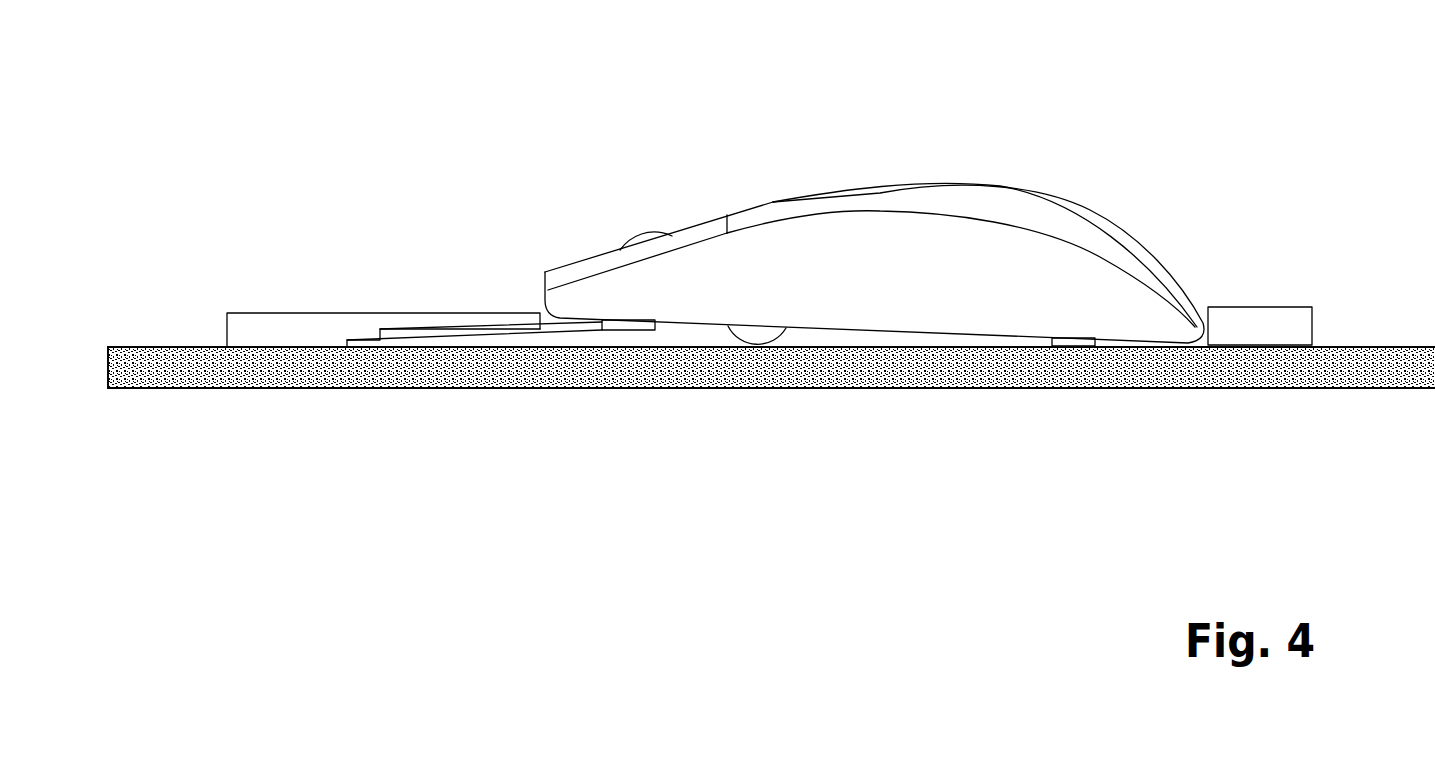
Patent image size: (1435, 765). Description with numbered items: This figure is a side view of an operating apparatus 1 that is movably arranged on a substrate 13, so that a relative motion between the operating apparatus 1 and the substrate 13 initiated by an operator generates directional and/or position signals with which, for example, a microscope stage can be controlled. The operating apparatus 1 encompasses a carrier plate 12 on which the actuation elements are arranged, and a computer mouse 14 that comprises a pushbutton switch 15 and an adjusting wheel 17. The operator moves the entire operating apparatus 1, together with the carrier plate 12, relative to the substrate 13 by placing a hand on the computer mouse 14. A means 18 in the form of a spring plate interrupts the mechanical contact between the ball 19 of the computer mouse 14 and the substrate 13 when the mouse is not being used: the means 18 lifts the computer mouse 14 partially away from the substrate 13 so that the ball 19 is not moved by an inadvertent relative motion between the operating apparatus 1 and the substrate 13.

The operating apparatus 1 is at (1139, 147).
The carrier plate 12 is at (268, 312).
The substrate 13 is at (940, 388).
The computer mouse 14 is at (912, 285).
The pushbutton switch 15 is at (593, 268).
The adjusting wheel 17 is at (645, 232).
The means for interrupting mechanical contact 18 is at (487, 333).
The ball 19 is at (753, 333).